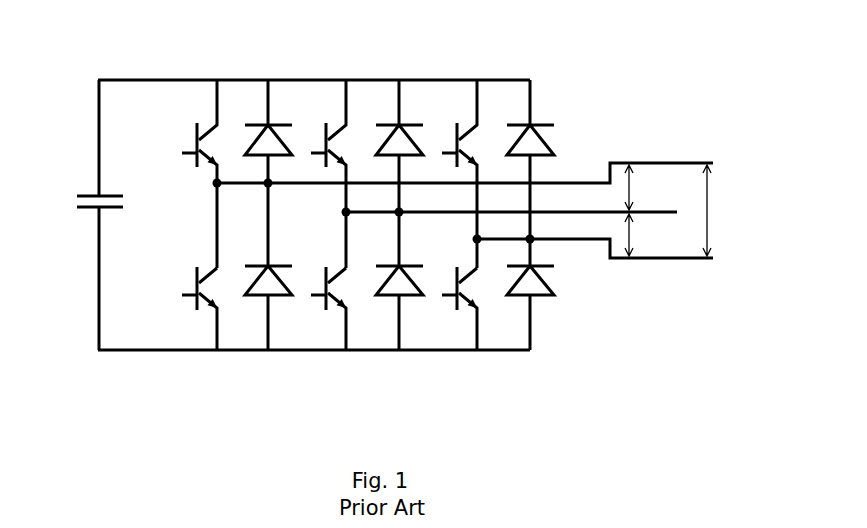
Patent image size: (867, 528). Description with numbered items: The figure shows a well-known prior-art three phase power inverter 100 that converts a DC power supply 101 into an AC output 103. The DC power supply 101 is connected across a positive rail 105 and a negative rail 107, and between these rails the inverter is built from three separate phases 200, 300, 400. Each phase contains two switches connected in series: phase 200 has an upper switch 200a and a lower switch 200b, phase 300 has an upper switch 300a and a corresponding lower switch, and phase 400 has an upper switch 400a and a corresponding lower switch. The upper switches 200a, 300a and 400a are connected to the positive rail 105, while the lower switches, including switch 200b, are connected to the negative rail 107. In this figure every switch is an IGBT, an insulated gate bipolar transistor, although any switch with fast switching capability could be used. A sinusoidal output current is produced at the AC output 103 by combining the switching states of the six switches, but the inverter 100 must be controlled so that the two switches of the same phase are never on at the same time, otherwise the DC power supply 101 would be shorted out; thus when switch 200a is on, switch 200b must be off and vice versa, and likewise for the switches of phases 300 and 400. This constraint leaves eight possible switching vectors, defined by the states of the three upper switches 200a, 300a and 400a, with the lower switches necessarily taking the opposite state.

The three phase power inverter 100 is at (56, 349).
The DC power supply 101 is at (75, 232).
The AC output 103 is at (696, 309).
The positive rail 105 is at (150, 80).
The negative rail 107 is at (117, 352).
The phase 200 is at (223, 386).
The switch 200a is at (205, 97).
The switch 200b is at (204, 335).
The phase 300 is at (354, 387).
The switch 300a is at (335, 95).
The phase 400 is at (487, 387).
The switch 400a is at (465, 95).